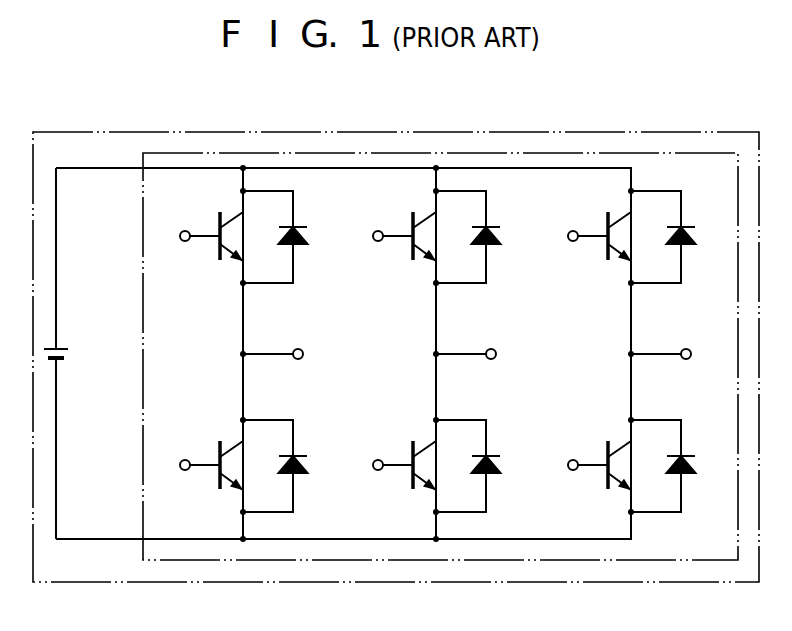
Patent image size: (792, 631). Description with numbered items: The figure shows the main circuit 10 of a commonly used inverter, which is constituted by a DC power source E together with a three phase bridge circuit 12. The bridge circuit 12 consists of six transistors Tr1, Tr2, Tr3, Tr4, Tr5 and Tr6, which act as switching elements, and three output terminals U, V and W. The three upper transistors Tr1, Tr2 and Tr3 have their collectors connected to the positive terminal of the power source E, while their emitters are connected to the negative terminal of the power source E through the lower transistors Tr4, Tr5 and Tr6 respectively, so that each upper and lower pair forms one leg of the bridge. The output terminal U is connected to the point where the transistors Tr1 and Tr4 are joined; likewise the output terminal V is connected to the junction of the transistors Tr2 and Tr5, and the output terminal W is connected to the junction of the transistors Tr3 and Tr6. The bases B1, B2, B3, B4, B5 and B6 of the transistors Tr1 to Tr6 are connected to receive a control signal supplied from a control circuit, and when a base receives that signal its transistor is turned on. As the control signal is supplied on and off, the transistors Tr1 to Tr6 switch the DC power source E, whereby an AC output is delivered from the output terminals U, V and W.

The main circuit 10 is at (533, 120).
The three phase bridge circuit 12 is at (368, 153).
The transistor Tr1 is at (217, 224).
The transistor Tr2 is at (410, 224).
The transistor Tr3 is at (605, 224).
The transistor Tr4 is at (217, 453).
The transistor Tr5 is at (410, 453).
The transistor Tr6 is at (605, 453).
The base B1 is at (197, 254).
The base B2 is at (390, 254).
The base B3 is at (585, 254).
The base B4 is at (197, 483).
The base B5 is at (390, 483).
The base B6 is at (585, 483).
The output terminal U is at (282, 355).
The output terminal V is at (474, 355).
The output terminal W is at (672, 355).
The DC power source E is at (65, 362).